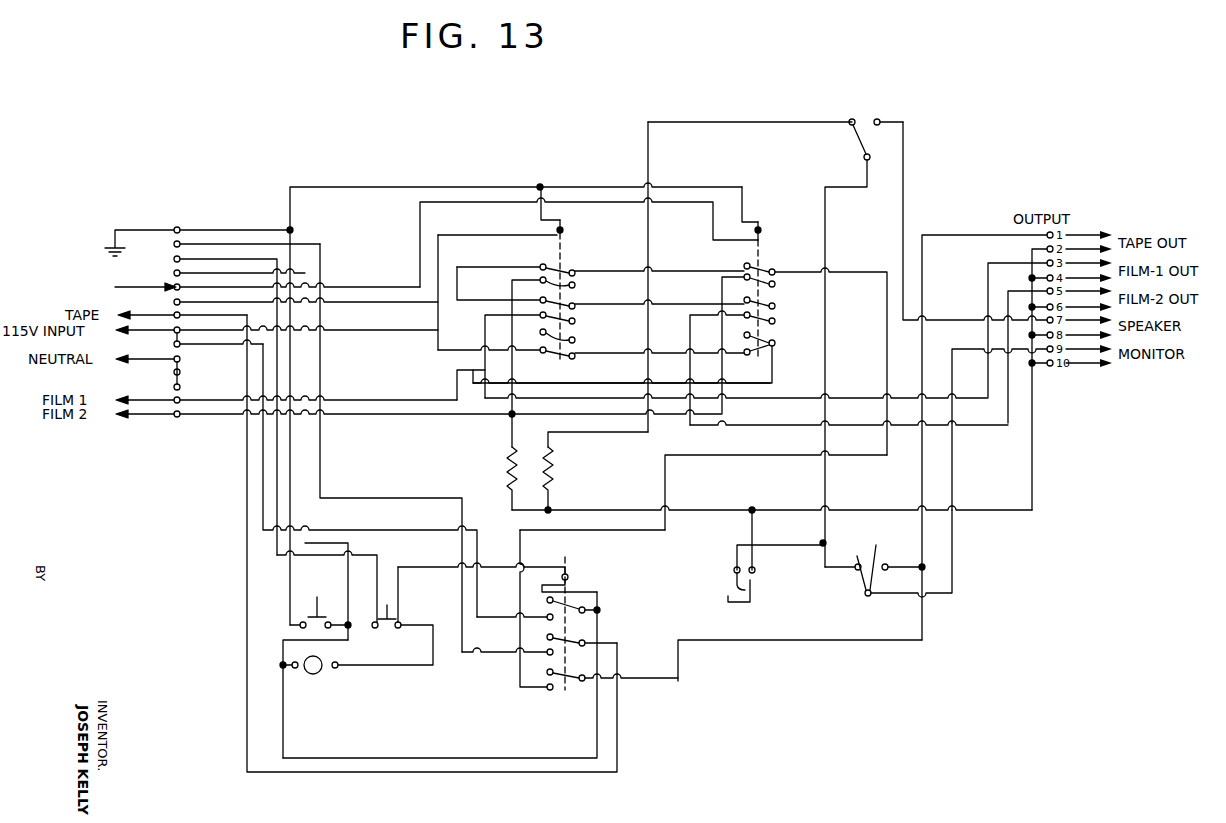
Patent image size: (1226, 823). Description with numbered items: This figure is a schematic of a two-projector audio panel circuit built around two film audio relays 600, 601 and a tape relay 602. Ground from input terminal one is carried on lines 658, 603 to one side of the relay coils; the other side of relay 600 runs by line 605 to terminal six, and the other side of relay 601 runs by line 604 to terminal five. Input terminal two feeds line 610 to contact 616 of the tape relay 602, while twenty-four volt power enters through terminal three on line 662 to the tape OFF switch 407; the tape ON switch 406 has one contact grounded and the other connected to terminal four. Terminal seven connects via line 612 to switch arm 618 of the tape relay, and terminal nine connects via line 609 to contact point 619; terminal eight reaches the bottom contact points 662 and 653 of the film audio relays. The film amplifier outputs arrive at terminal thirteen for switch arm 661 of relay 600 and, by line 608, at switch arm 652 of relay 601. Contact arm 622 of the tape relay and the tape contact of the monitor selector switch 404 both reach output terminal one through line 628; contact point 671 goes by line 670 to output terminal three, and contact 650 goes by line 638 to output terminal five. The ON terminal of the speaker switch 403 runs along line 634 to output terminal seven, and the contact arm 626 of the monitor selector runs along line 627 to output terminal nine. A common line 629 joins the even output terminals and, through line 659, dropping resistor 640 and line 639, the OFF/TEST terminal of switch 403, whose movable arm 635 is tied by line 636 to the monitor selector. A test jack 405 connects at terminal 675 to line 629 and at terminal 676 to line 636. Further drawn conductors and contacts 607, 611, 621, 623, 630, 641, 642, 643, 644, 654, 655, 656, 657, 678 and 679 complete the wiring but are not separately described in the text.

The OFF/TEST-ON speaker switch 403 is at (880, 119).
The monitor selector switch 404 is at (938, 612).
The test jack 405 is at (723, 599).
The tape ON switch 406 is at (326, 617).
The tape OFF switch 407 is at (400, 616).
The film audio relay 600 is at (566, 230).
The film audio relay 601 is at (762, 235).
The tape relay 602 is at (570, 573).
The line 603 is at (402, 185).
The line 604 is at (408, 276).
The line 605 is at (404, 310).
The conductor 607 is at (422, 400).
The line 608 is at (401, 418).
The line 609 is at (414, 505).
The line 610 is at (414, 540).
The conductor 611 is at (288, 579).
The line 612 is at (245, 625).
The contact of tape relay 616 is at (406, 334).
The switch arm of tape relay 618 is at (547, 640).
The contact point of tape relay 619 is at (547, 656).
The switch contact 621 is at (552, 692).
The contact arm of tape relay 622 is at (566, 692).
The conductor 623 is at (484, 758).
The contact arm of monitor selector switch 626 is at (875, 558).
The line 627 is at (960, 553).
The line 628 is at (921, 478).
The common line 629 is at (1034, 462).
The conductor 630 is at (980, 420).
The line 634 is at (907, 198).
The movable arm of speaker switch 635 is at (858, 148).
The line 636 is at (842, 192).
The line 638 is at (803, 432).
The line 639 is at (610, 428).
The dropping resistor 640 is at (553, 481).
The resistor 641 is at (509, 468).
The conductor 642 is at (676, 420).
The conductor 643 is at (708, 304).
The conductor 644 is at (703, 270).
The contact of film audio relay 650 is at (775, 322).
The switch arm of film audio relay 652 is at (805, 350).
The bottom contact point of film audio relay 653 is at (622, 364).
The switch contact 654 is at (540, 262).
The switch contact 655 is at (538, 276).
The switch contact 656 is at (575, 275).
The conductor 657 is at (455, 302).
The line 658 is at (262, 222).
The line 659 is at (640, 508).
The switch arm of film audio relay 661 is at (580, 343).
The line / bottom contact point 662 is at (279, 263).
The line 670 is at (977, 361).
The contact point of film audio relay 671 is at (578, 323).
The terminal of test jack 675 is at (750, 513).
The terminal of test jack 676 is at (820, 548).
The pushbutton contact 678 is at (730, 579).
The pushbutton contact 679 is at (756, 592).